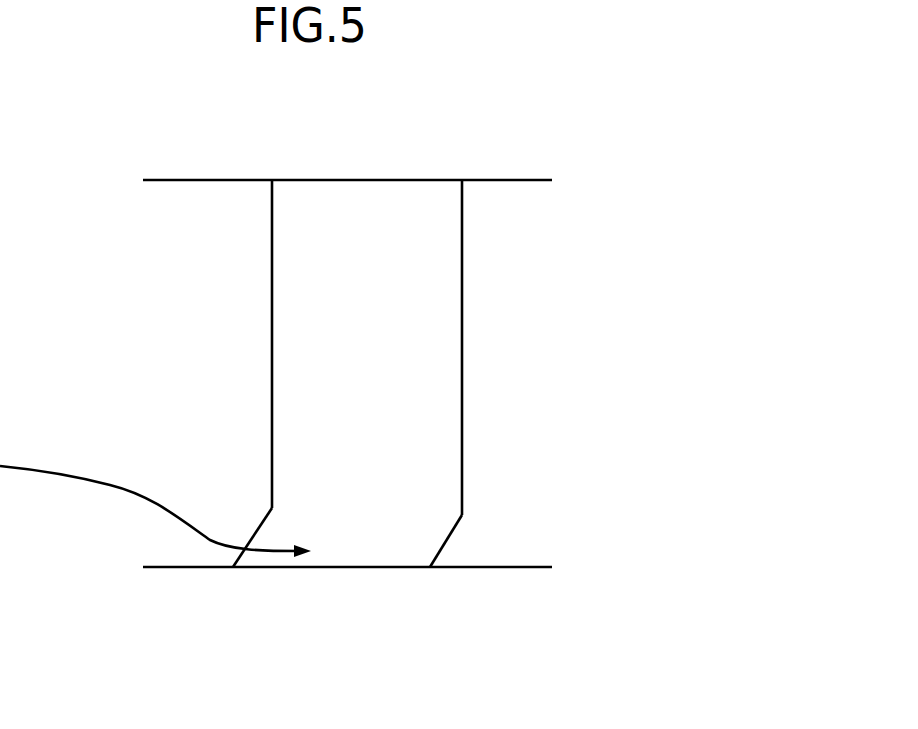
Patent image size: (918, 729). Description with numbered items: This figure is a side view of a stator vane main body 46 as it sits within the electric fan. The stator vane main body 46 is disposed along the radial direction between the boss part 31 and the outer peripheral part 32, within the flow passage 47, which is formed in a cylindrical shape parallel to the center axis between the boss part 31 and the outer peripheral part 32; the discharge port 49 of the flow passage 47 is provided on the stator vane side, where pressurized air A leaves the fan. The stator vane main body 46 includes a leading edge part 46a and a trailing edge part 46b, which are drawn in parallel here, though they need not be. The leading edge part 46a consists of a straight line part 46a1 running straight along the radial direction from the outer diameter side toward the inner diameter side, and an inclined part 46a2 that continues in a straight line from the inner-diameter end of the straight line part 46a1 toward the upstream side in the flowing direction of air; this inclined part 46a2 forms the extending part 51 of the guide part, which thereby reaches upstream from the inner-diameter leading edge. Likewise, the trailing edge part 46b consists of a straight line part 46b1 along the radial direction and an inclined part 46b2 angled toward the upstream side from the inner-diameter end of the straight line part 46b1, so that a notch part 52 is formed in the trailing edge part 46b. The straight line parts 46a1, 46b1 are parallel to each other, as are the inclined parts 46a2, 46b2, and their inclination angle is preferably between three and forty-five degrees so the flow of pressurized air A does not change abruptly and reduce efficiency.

The boss part 31 is at (360, 648).
The outer peripheral part 32 is at (360, 126).
The stator vane main body 46 is at (356, 375).
The leading edge part 46a is at (222, 376).
The straight line part 46a1 is at (271, 320).
The inclined part 46a2 is at (237, 553).
The trailing edge part 46b is at (484, 350).
The straight line part 46b1 is at (463, 318).
The inclined part 46b2 is at (452, 535).
The flow passage 47 is at (170, 373).
The discharge port 49 is at (525, 372).
The extending part 51 is at (259, 557).
The notch part 52 is at (438, 555).
The pressurized air A is at (82, 480).